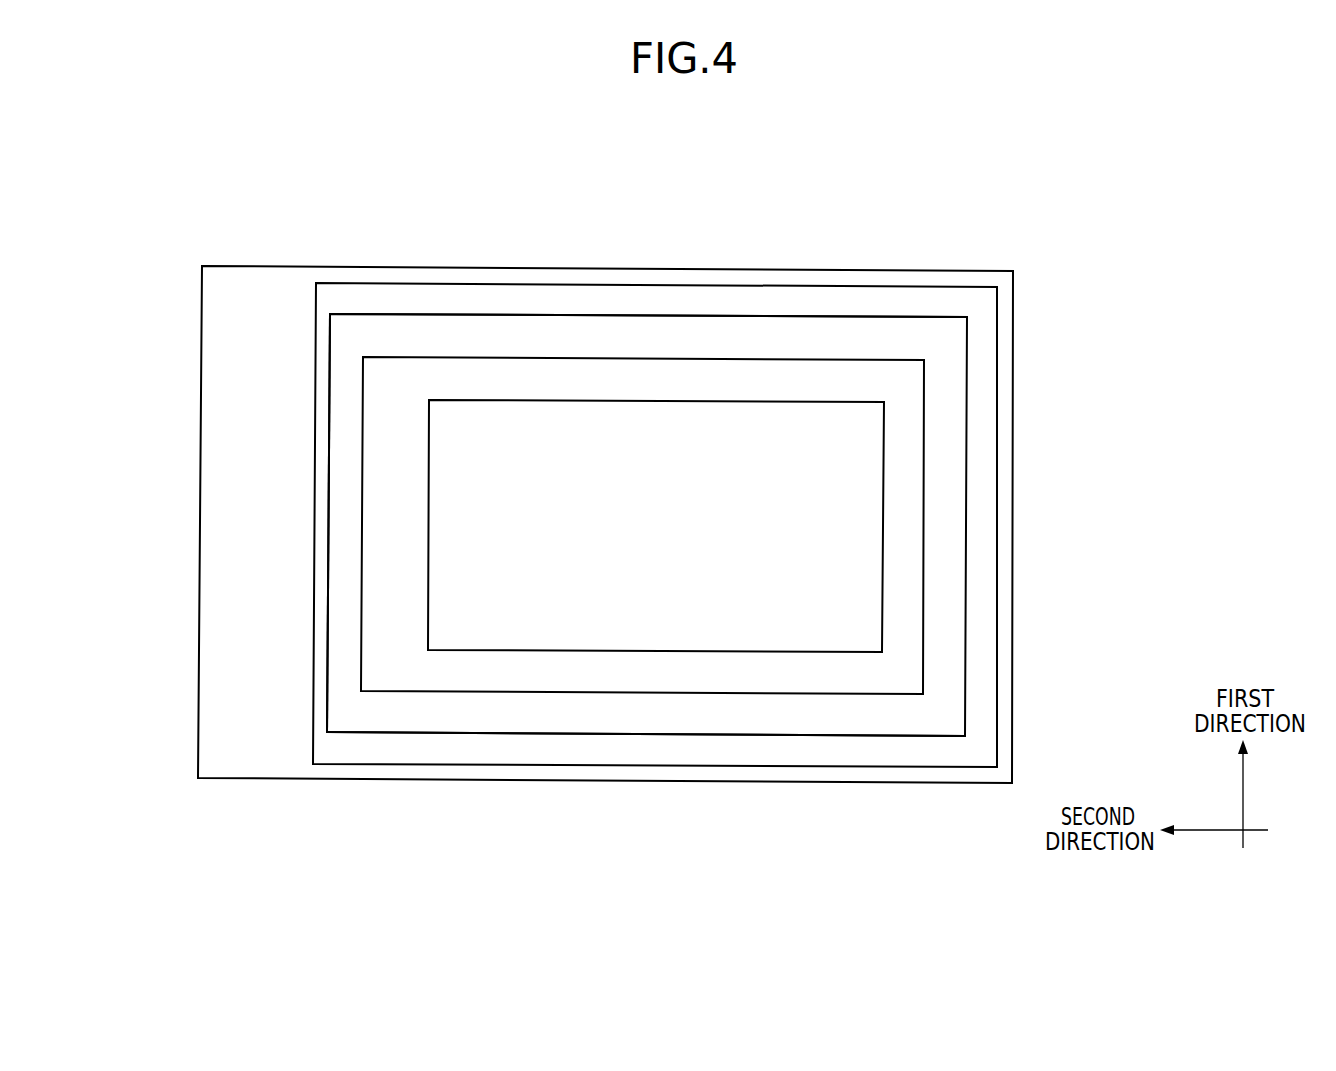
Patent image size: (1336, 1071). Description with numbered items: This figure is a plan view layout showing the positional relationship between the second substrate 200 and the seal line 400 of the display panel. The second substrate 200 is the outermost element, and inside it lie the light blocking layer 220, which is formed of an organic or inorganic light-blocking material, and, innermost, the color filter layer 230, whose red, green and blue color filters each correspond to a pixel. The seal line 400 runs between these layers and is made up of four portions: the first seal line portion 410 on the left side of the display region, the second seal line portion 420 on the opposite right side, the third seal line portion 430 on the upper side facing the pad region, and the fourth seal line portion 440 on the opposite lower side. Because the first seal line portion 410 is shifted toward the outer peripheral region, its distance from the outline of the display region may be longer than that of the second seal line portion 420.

The second substrate 200 is at (979, 268).
The light blocking layer 220 is at (998, 358).
The seal line 400 is at (972, 417).
The color filter layer 230 is at (889, 474).
The second seal line portion 420 is at (948, 527).
The first seal line portion 410 is at (348, 525).
The third seal line portion 430 is at (660, 338).
The fourth seal line portion 440 is at (661, 713).